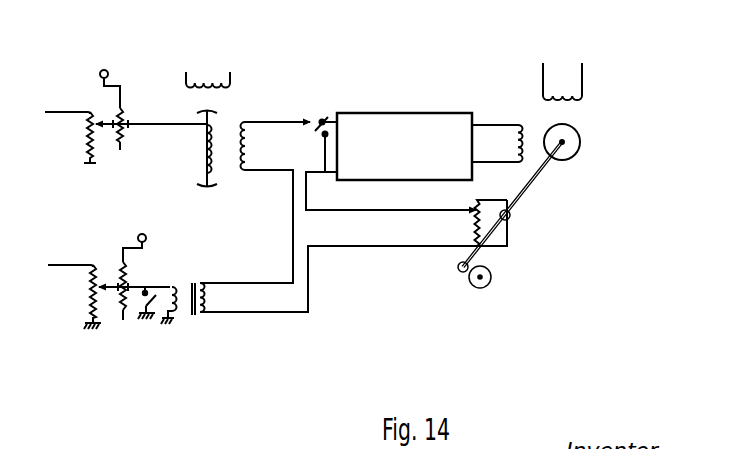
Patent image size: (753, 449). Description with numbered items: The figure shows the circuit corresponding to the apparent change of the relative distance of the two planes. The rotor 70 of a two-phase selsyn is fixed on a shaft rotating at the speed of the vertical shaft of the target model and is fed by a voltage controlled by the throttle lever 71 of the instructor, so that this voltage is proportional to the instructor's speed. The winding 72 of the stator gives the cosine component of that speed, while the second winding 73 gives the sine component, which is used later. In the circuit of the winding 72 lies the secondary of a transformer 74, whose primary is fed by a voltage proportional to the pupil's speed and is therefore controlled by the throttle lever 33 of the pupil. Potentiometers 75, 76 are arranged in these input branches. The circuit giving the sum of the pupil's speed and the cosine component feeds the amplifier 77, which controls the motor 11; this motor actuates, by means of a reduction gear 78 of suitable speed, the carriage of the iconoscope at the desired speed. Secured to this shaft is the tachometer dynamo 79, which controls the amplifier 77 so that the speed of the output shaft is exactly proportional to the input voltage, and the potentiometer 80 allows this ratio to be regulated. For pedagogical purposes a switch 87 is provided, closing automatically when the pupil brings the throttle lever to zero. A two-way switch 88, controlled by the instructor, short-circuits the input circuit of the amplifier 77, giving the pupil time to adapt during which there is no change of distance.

The motor 11 is at (576, 152).
The throttle lever of the pupil 33 is at (138, 232).
The rotor of a two-phase selsyn 70 is at (202, 159).
The throttle lever of the instructor 71 is at (96, 67).
The winding of the stator 72 is at (244, 179).
The second winding 73 is at (198, 74).
The transformer 74 is at (199, 319).
The potentiometer 75 is at (86, 146).
The potentiometer 76 is at (89, 312).
The amplifier 77 is at (407, 123).
The reduction gear 78 is at (473, 287).
The tachometer dynamo 79 is at (513, 217).
The potentiometer 80 is at (474, 230).
The switch 87 is at (157, 289).
The two-way switch 88 is at (322, 112).